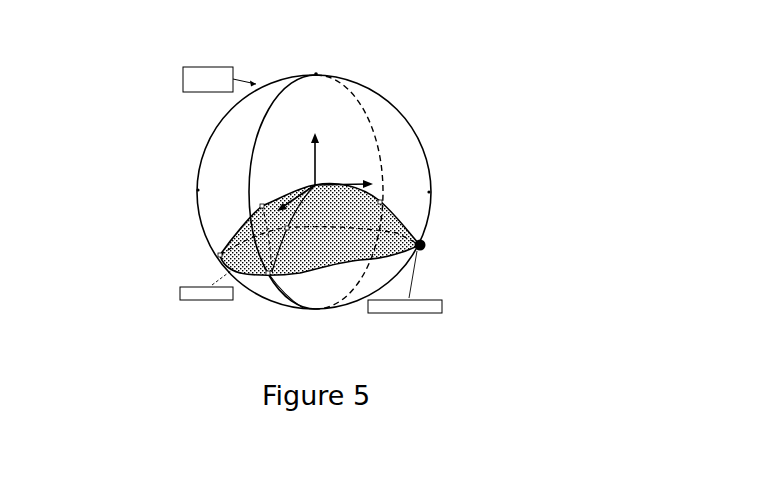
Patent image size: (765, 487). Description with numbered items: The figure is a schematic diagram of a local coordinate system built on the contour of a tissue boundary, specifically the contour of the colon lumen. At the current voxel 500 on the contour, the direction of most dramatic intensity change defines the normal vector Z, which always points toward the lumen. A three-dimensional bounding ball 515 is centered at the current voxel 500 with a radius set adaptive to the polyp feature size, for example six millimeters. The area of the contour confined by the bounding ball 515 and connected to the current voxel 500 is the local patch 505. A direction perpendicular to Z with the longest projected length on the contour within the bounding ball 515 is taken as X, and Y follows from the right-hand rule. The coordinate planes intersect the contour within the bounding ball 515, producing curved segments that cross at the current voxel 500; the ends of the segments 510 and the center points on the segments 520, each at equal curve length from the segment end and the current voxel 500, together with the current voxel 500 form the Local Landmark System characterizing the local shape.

The current voxel 500 is at (309, 180).
The local patch 505 is at (246, 275).
The end of segment 510 is at (425, 244).
The bounding ball 515 is at (367, 90).
The center point on segment 520 is at (382, 203).